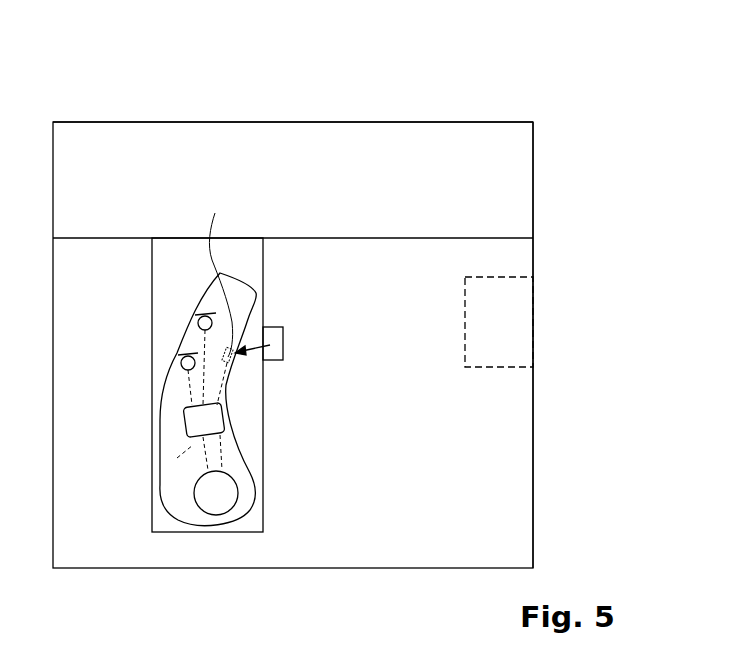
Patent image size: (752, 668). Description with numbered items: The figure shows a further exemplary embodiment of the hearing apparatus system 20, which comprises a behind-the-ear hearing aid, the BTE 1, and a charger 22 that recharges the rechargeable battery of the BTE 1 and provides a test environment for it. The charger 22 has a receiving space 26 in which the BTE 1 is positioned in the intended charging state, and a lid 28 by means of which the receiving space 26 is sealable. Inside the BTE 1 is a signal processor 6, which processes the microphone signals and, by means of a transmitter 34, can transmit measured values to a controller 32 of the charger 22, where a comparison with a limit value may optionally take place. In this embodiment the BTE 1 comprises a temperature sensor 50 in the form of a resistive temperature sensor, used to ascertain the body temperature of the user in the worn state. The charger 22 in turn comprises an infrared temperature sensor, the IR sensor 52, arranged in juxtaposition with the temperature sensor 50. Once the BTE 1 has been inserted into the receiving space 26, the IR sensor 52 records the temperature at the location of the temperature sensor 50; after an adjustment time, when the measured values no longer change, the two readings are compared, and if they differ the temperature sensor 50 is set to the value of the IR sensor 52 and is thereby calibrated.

The BTE 1 is at (178, 294).
The signal processor 6 is at (185, 418).
The hearing apparatus system 20 is at (498, 107).
The charger 22 is at (535, 432).
The receiving space 26 is at (265, 505).
The lid 28 is at (307, 122).
The controller 32 is at (522, 322).
The transmitter 34 is at (173, 455).
The temperature sensor 50 is at (208, 293).
The IR sensor 52 is at (283, 337).